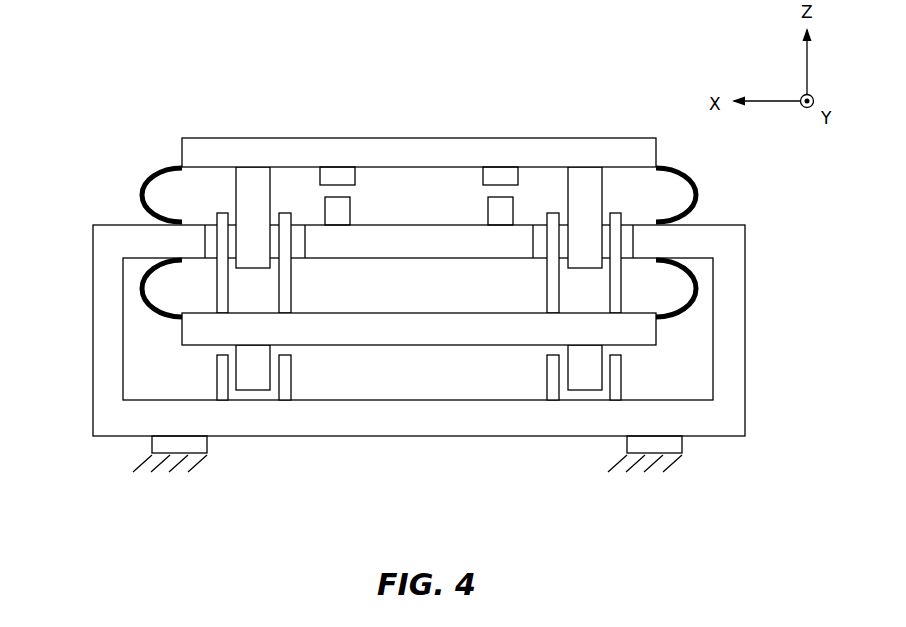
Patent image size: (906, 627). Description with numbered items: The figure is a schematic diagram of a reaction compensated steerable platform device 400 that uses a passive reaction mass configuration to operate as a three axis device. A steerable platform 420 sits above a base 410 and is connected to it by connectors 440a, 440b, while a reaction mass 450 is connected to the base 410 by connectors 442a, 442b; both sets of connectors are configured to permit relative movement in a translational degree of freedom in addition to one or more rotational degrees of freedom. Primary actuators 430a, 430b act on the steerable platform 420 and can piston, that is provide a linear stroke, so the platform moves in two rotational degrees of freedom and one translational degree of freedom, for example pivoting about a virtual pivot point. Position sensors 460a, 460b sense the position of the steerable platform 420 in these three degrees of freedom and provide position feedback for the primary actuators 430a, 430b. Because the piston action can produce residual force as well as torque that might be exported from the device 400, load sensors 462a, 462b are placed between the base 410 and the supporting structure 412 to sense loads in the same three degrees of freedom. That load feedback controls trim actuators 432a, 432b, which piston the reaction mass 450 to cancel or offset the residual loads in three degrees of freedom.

The reaction compensated steerable platform device 400 is at (238, 42).
The base 410 is at (93, 367).
The supporting structure 412 is at (157, 478).
The steerable platform 420 is at (419, 137).
The primary actuator 430a is at (205, 205).
The primary actuator 430b is at (633, 205).
The trim actuator 432a is at (297, 365).
The trim actuator 432b is at (538, 363).
The connector 440a is at (142, 195).
The connector 440b is at (698, 192).
The connector 442a is at (142, 292).
The connector 442b is at (698, 292).
The reaction mass 450 is at (182, 332).
The position sensor 460a is at (312, 188).
The position sensor 460b is at (522, 188).
The load sensor 462a is at (152, 450).
The load sensor 462b is at (682, 445).